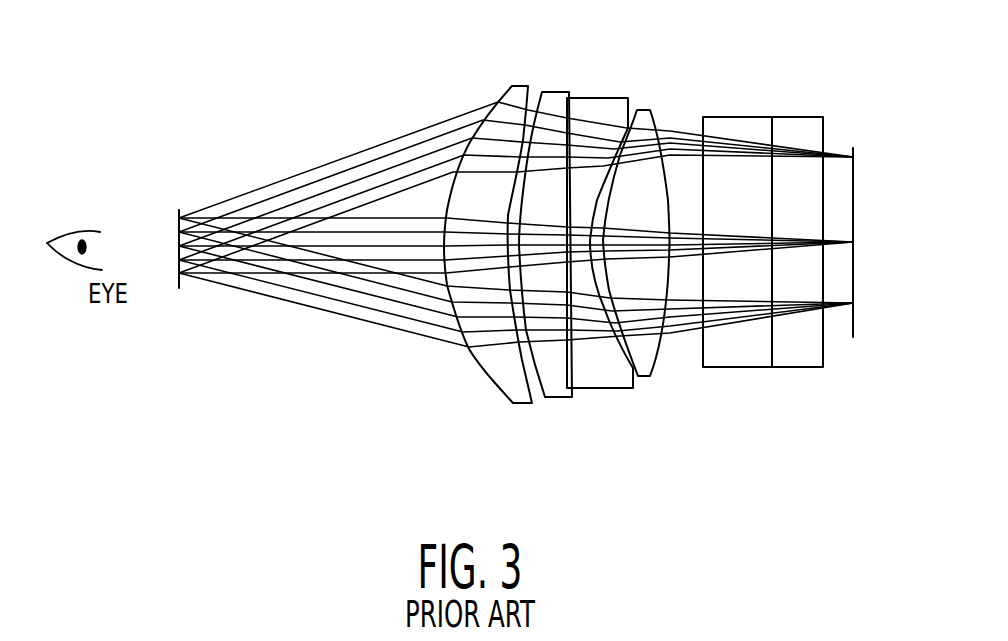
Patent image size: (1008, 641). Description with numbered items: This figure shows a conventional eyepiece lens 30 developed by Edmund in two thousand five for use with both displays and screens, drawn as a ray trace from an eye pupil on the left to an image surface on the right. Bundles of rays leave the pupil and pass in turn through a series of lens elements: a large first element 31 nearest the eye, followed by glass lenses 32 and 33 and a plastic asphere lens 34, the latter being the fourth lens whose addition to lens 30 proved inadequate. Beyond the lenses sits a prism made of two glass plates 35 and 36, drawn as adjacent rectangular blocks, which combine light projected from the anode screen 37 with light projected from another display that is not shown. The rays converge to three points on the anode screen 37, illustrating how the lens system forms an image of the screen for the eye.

The lens 30 is at (393, 82).
The first lens 31 is at (503, 368).
The glass lens 32 is at (553, 388).
The glass lens 33 is at (603, 378).
The plastic asphere lens 34 is at (648, 360).
The glass plate 35 is at (735, 357).
The glass plate 36 is at (800, 357).
The anode screen 37 is at (857, 178).